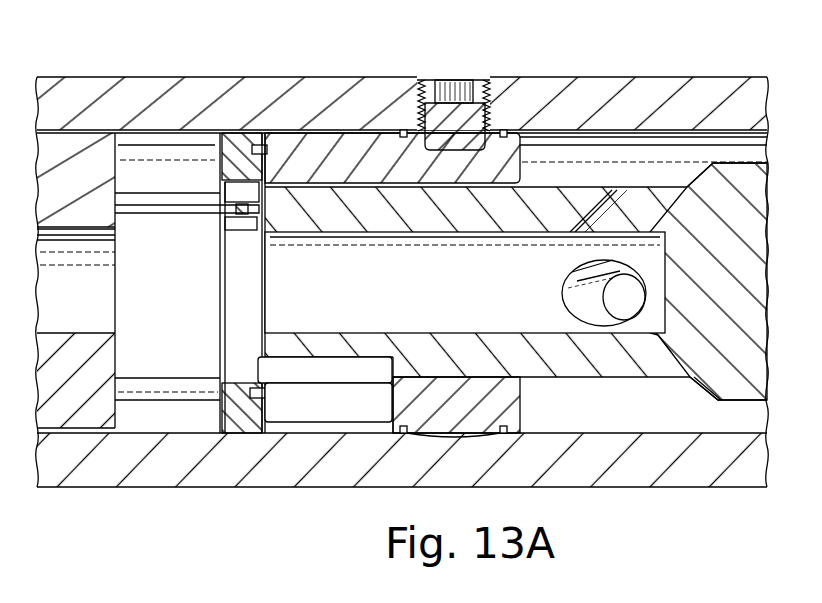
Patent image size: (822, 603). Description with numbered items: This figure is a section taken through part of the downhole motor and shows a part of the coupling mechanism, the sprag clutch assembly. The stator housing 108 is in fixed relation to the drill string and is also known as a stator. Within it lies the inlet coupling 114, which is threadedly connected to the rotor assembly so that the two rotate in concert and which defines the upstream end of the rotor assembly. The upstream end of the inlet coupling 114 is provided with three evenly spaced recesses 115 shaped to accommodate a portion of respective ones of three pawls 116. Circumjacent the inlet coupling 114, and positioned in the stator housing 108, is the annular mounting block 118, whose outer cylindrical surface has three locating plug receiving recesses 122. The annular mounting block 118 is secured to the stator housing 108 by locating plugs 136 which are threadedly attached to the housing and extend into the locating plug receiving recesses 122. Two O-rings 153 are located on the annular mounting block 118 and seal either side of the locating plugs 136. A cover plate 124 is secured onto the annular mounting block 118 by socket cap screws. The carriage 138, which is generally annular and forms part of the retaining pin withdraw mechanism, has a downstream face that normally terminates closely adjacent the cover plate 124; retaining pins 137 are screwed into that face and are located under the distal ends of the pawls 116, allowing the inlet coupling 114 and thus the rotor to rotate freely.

The stator housing 108 is at (272, 110).
The inlet coupling 114 is at (552, 350).
The recess 115 is at (342, 355).
The pawl 116 is at (315, 398).
The annular mounting block 118 is at (338, 163).
The locating plug receiving recess 122 is at (503, 137).
The cover plate 124 is at (235, 415).
The locating plug 136 is at (455, 117).
The retaining pin 137 is at (185, 200).
The carriage 138 is at (68, 183).
The O-ring 153 is at (405, 130).